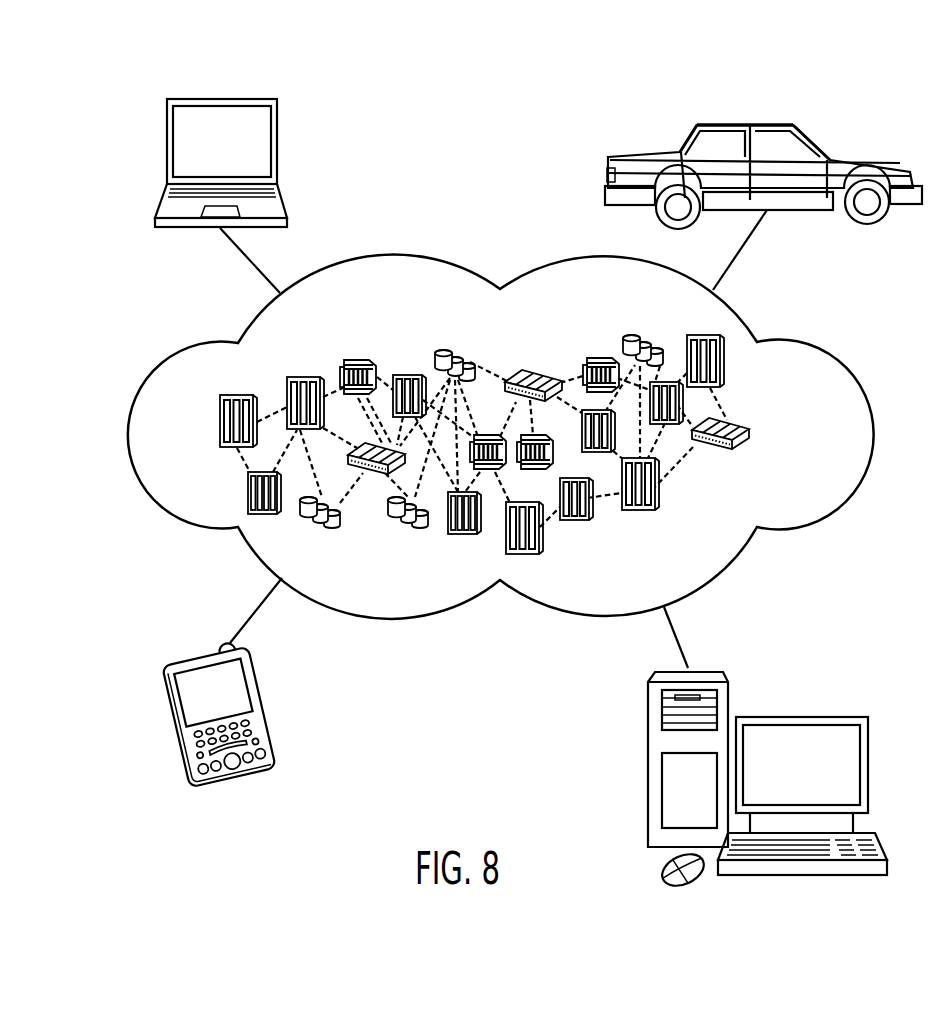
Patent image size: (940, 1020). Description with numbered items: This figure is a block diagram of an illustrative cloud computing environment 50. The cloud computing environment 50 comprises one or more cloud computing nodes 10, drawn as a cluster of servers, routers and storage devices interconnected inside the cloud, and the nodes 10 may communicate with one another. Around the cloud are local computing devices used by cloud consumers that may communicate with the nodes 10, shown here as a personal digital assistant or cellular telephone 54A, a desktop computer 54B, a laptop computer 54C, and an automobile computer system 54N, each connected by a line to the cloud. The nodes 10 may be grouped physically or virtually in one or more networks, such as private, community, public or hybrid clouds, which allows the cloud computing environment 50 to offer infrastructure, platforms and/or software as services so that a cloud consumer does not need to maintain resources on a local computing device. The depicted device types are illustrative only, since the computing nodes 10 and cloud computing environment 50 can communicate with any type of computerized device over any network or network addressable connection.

The cloud computing node 10 is at (757, 433).
The cloud computing environment 50 is at (815, 347).
The personal digital assistant (PDA) or cellular telephone 54A is at (202, 657).
The desktop computer 54B is at (802, 715).
The laptop computer 54C is at (220, 98).
The automobile computer system 54N is at (743, 125).